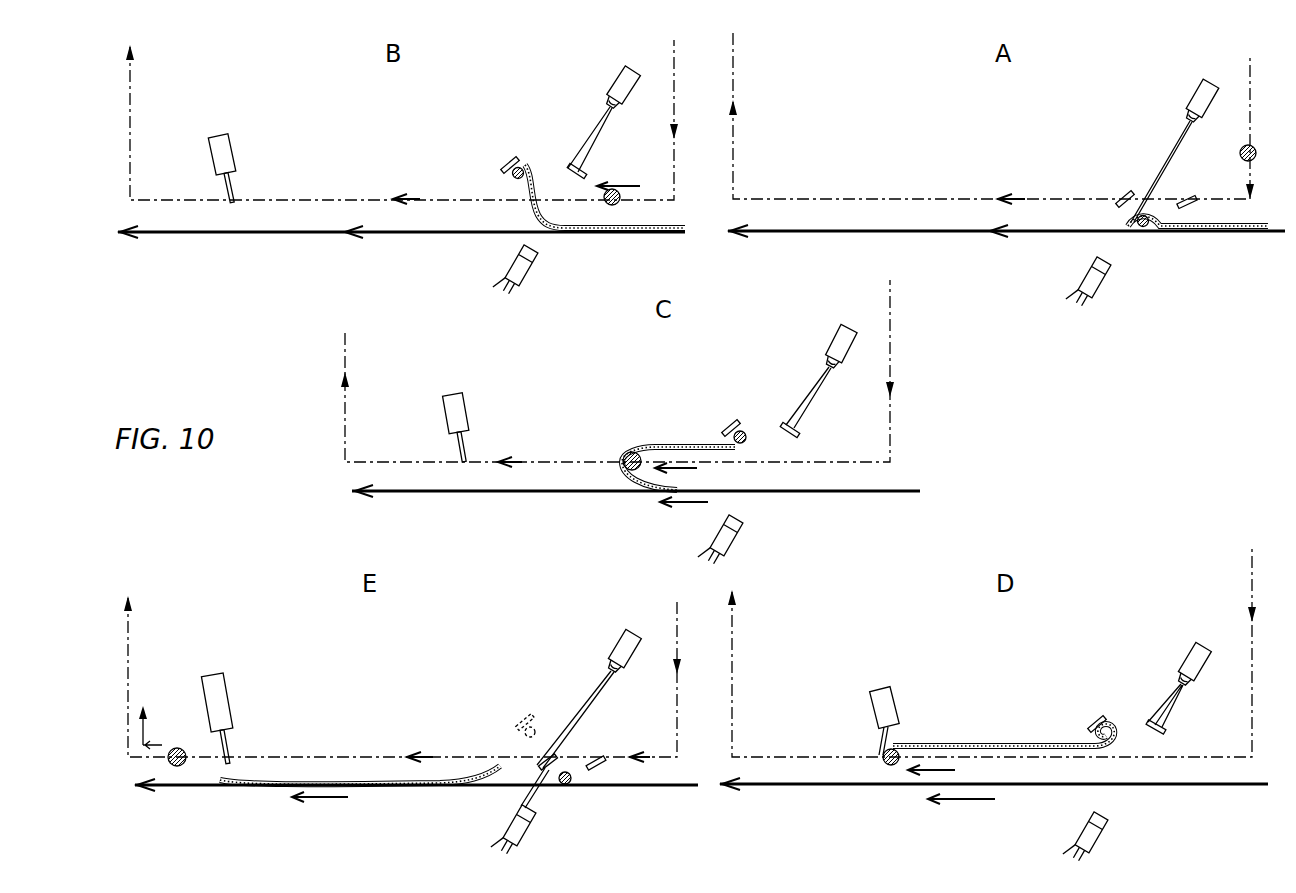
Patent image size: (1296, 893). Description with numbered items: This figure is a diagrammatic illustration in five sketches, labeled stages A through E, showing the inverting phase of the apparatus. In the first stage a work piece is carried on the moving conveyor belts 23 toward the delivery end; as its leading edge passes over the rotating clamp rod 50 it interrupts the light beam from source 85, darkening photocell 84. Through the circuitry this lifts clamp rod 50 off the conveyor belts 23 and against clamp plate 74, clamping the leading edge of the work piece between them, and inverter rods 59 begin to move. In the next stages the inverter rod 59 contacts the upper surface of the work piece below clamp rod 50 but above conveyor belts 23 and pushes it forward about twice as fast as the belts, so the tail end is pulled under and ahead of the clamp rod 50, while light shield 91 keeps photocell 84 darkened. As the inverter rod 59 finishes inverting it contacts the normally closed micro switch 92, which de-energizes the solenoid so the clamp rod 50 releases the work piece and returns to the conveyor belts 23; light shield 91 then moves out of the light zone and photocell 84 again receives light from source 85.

The conveyor belts 23 is at (437, 236).
The clamp rod 50 is at (515, 178).
The inverter rod 59 is at (617, 188).
The clamp plate 74 is at (505, 160).
The photocell 84 is at (523, 280).
The light source 85 is at (614, 79).
The light shield 91 is at (592, 168).
The micro switch 92 is at (236, 157).